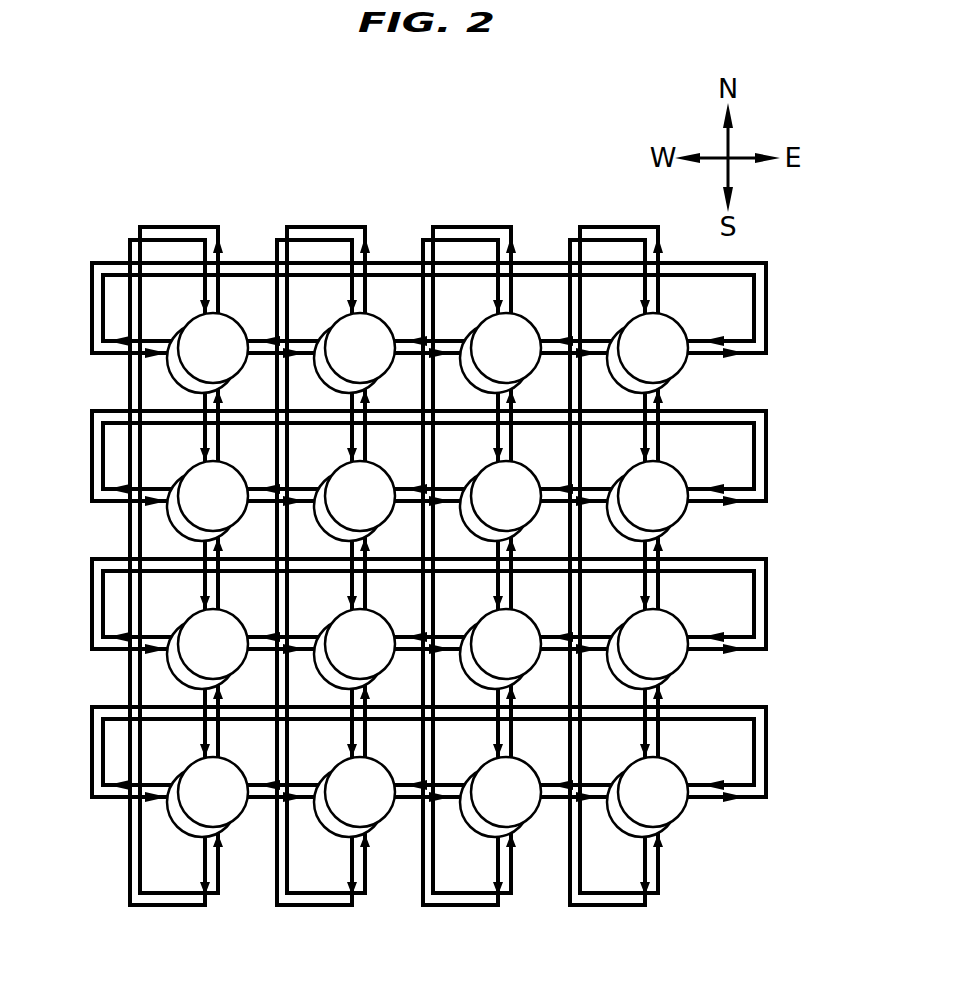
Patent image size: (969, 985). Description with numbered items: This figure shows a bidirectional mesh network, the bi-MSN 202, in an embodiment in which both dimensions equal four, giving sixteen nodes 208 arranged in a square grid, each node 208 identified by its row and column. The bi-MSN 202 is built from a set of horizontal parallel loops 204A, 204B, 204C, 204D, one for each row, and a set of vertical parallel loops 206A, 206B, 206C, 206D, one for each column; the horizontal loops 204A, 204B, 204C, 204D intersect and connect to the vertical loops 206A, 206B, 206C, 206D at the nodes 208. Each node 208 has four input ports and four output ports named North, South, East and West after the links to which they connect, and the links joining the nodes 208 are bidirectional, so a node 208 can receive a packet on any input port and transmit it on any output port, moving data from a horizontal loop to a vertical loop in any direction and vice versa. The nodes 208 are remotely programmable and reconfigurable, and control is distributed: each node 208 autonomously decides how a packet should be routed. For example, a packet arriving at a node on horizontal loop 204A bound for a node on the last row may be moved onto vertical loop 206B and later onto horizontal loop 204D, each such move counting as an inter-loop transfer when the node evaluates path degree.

The bi-MSN 202 is at (208, 165).
The horizontal loop 204A is at (766, 320).
The horizontal loop 204B is at (766, 468).
The horizontal loop 204C is at (766, 616).
The horizontal loop 204D is at (766, 764).
The vertical loop 206A is at (167, 907).
The vertical loop 206B is at (314, 907).
The vertical loop 206C is at (460, 907).
The vertical loop 206D is at (607, 907).
The node 208 is at (184, 388).